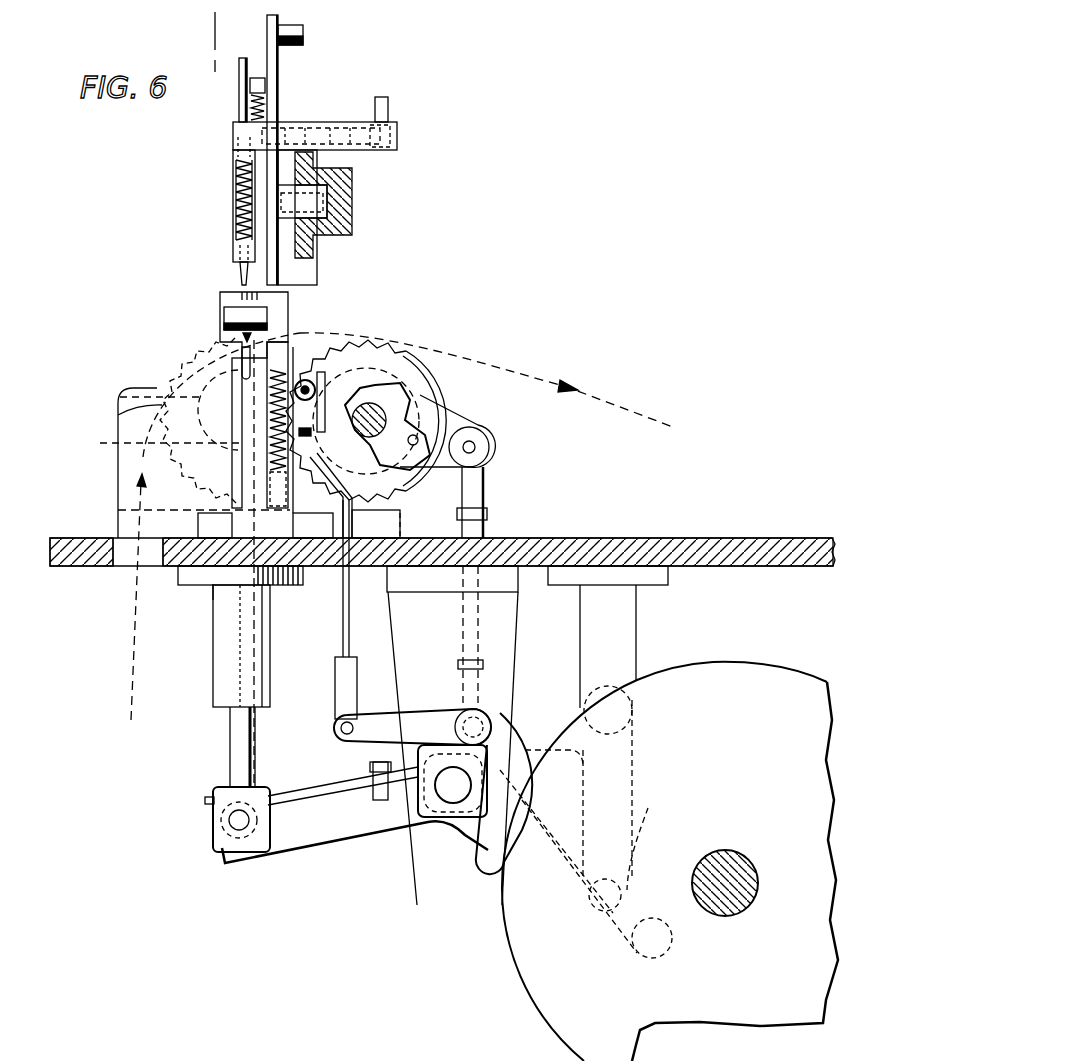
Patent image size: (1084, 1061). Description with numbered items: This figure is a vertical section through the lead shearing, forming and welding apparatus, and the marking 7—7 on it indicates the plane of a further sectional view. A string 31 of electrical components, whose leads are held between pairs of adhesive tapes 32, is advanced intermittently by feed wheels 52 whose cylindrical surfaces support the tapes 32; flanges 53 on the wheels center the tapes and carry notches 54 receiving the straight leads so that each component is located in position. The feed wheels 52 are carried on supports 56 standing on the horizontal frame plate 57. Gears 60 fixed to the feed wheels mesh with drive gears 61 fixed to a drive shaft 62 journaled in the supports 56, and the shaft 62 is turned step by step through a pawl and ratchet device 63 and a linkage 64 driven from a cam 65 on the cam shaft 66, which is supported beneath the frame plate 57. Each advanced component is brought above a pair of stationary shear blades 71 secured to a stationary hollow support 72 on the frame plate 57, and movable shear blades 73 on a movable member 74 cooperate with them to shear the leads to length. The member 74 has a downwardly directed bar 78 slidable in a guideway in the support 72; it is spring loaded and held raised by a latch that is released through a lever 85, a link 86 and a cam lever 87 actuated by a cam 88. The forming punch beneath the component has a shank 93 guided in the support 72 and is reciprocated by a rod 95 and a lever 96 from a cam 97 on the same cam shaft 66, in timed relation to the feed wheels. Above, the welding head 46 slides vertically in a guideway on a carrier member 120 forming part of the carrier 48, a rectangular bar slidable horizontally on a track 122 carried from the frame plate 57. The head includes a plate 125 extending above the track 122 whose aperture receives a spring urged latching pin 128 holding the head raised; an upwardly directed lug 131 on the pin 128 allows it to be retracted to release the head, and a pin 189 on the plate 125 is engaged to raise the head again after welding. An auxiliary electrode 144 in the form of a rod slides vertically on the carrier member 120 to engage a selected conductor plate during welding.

The section line 7- 7 is at (210, 24).
The string of components 31 is at (135, 607).
The adhesive tapes 32 is at (620, 381).
The welding head 46 is at (302, 98).
The carrier 48 is at (352, 212).
The feed wheels 52 is at (158, 420).
The flanges 53 is at (203, 378).
The notches 54 is at (150, 405).
The supports 56 is at (136, 466).
The horizontal frame plate 57 is at (688, 550).
The gears 60 is at (120, 394).
The drive gears 61 is at (322, 345).
The drive shaft 62 is at (395, 392).
The pawl and ratchet device 63 is at (405, 420).
The linkage 64 is at (486, 500).
The cam 65 is at (656, 802).
The cam shaft 66 is at (733, 874).
The stationary shear blades 71 is at (207, 380).
The stationary hollow support 72 is at (232, 500).
The movable shear blades 73 is at (228, 318).
The movable member 74 is at (228, 300).
The downwardly directed bar 78 is at (286, 318).
The lever 85 is at (362, 412).
The link 86 is at (345, 612).
The cam lever 87 is at (375, 740).
The cam 88 is at (530, 907).
The shank 93 is at (153, 442).
The rod 95 is at (240, 730).
The lever 96 is at (319, 828).
The cam 97 is at (672, 950).
The carrier members 120 is at (255, 133).
The track 122 is at (327, 207).
The plate 125 is at (278, 57).
The latching pin 128 is at (360, 140).
The upwardly directed lug 131 is at (390, 107).
The auxiliary electrodes 144 is at (240, 270).
The pin 189 is at (304, 42).